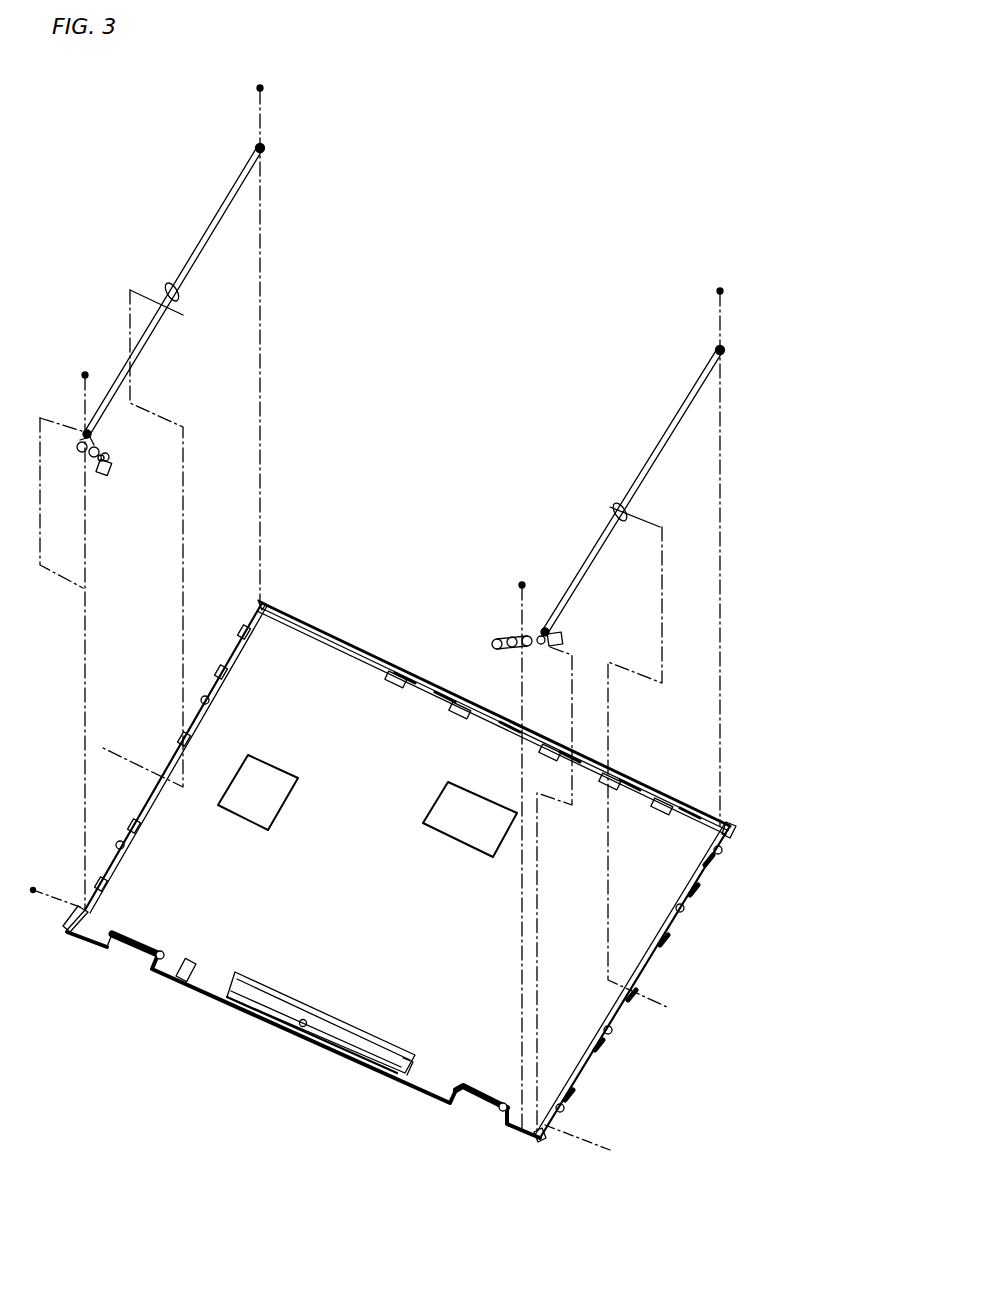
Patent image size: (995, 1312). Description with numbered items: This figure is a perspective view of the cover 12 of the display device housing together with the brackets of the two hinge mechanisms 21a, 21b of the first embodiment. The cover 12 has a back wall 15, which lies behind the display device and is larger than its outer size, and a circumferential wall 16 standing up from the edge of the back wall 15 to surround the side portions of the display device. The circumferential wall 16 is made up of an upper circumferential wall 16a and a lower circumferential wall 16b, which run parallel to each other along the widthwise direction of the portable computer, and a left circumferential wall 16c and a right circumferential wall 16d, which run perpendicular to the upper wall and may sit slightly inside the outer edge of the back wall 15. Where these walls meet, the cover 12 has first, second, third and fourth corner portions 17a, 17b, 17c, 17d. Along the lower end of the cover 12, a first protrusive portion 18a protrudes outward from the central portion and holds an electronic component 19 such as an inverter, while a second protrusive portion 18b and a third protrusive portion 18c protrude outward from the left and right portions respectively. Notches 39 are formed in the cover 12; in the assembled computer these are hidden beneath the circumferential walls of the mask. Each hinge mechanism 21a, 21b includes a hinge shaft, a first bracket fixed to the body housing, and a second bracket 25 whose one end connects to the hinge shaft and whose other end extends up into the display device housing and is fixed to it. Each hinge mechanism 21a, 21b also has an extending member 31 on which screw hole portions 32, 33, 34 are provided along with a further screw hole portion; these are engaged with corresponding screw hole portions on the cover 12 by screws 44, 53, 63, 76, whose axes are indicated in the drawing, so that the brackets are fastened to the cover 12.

The cover 12 is at (400, 878).
The back wall 15 is at (420, 720).
The circumferential wall 16 is at (400, 878).
The upper circumferential wall 16a is at (494, 719).
The lower circumferential wall 16b is at (303, 1044).
The left circumferential wall 16c is at (176, 736).
The right circumferential wall 16d is at (658, 965).
The first corner portion 17a is at (733, 822).
The second corner portion 17b is at (261, 602).
The third corner portion 17c is at (66, 930).
The fourth corner portion 17d is at (541, 1142).
The first protrusive portion 18a is at (203, 985).
The second protrusive portion 18b is at (106, 955).
The third protrusive portion 18c is at (503, 1122).
The electronic component 19 is at (347, 1035).
The hinge mechanism 21a is at (84, 459).
The hinge mechanism 21b is at (525, 656).
The second bracket 25 is at (426, 373).
The extending member 31 is at (204, 258).
The screw hole portion 32 is at (86, 430).
The screw hole portion 33 is at (256, 148).
The screw hole portion 34 is at (168, 290).
The notch 39 is at (244, 638).
The screw 44 is at (36, 895).
The screw 53 is at (262, 89).
The screw 63 is at (128, 760).
The screw 76 is at (85, 372).